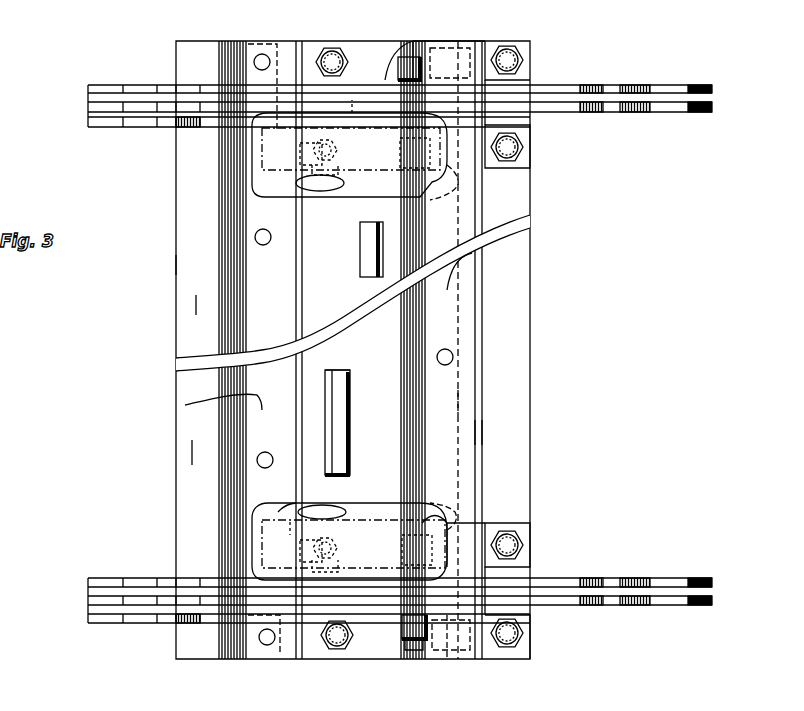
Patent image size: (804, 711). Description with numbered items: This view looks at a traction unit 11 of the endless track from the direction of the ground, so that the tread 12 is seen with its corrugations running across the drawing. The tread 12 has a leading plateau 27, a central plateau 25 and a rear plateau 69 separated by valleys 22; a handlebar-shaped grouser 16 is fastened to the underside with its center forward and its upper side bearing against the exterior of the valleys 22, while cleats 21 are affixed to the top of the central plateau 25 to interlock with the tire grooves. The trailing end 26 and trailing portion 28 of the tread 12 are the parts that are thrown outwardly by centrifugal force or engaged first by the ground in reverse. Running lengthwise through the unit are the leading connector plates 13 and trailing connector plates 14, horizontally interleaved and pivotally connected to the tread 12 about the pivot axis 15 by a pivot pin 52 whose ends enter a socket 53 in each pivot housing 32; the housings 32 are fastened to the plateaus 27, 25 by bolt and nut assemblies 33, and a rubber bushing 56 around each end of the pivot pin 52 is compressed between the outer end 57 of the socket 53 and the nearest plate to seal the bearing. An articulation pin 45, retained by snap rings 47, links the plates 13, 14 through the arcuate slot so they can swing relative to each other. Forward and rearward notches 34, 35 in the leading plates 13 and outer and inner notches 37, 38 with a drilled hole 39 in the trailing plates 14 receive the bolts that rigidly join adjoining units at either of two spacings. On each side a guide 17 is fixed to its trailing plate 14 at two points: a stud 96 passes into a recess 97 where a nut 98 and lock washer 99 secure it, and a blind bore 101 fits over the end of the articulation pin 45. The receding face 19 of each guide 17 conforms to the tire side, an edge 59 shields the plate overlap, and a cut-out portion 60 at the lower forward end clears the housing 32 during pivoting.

The traction unit 11 is at (372, 347).
The tread 12 is at (530, 318).
The leading connector plate 13 is at (712, 107).
The trailing connector plate 14 is at (88, 122).
The pivot axis 15 is at (470, 630).
The grouser 16 is at (290, 50).
The guide 17 is at (252, 168).
The face 19 is at (360, 182).
The cleat 21 is at (365, 243).
The valley 22 is at (472, 252).
The central plateau 25 is at (353, 412).
The trailing end 26 is at (178, 265).
The leading plateau 27 is at (480, 432).
The trailing portion 28 is at (198, 305).
The pivot housing 32 is at (527, 41).
The bolt and nut assembly 33 is at (326, 50).
The forward notch 34 is at (642, 85).
The rearward notch 35 is at (590, 85).
The outer notch 37 is at (123, 85).
The inner notch 38 is at (185, 127).
The drilled hole 39 is at (180, 85).
The articulation pin 45 is at (409, 57).
The snap ring 47 is at (390, 75).
The pivot pin 52 is at (447, 56).
The socket 53 is at (452, 652).
The rubber bushing 56 is at (426, 652).
The outer end 57 is at (450, 30).
The edge 59 is at (358, 112).
The cut-out portion 60 is at (450, 190).
The rear plateau 69 is at (190, 452).
The stud 96 is at (322, 140).
The recess 97 is at (320, 191).
The nut 98 is at (298, 505).
The lock washer 99 is at (290, 535).
The blind bore 101 is at (440, 160).